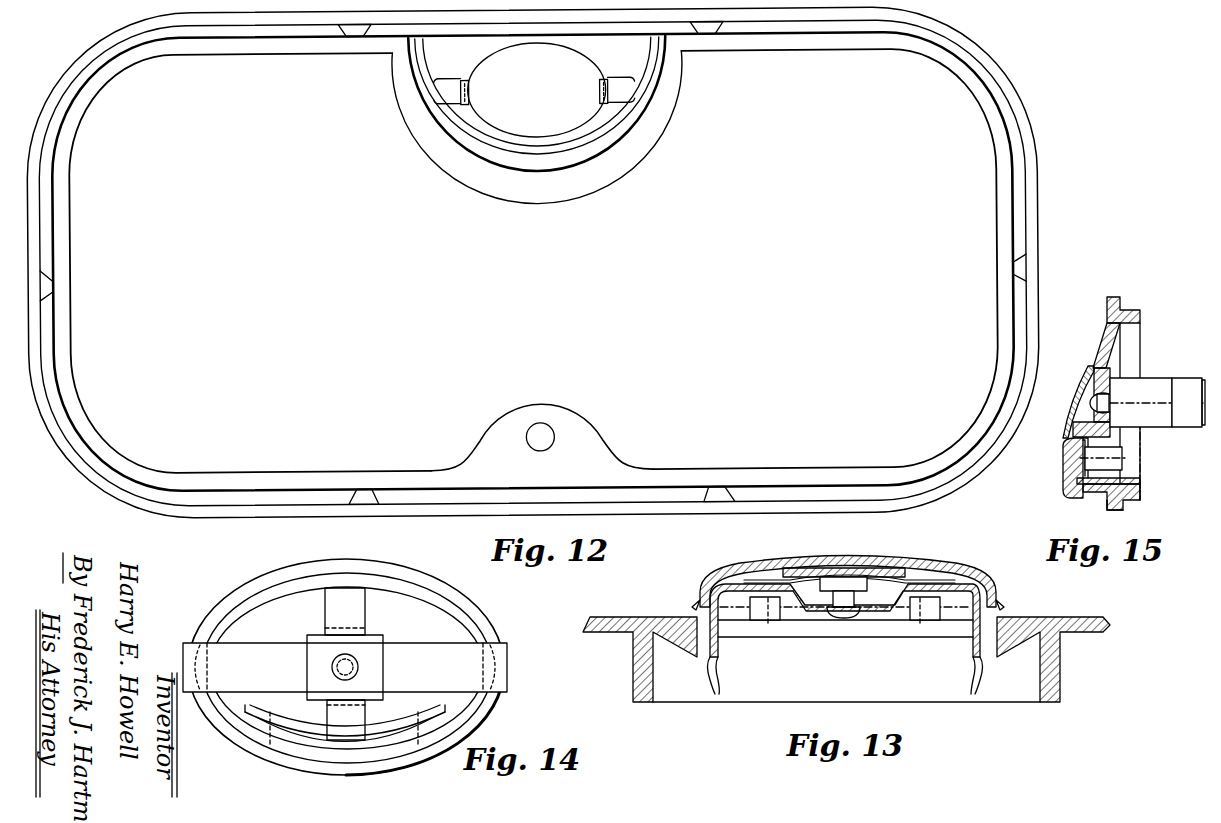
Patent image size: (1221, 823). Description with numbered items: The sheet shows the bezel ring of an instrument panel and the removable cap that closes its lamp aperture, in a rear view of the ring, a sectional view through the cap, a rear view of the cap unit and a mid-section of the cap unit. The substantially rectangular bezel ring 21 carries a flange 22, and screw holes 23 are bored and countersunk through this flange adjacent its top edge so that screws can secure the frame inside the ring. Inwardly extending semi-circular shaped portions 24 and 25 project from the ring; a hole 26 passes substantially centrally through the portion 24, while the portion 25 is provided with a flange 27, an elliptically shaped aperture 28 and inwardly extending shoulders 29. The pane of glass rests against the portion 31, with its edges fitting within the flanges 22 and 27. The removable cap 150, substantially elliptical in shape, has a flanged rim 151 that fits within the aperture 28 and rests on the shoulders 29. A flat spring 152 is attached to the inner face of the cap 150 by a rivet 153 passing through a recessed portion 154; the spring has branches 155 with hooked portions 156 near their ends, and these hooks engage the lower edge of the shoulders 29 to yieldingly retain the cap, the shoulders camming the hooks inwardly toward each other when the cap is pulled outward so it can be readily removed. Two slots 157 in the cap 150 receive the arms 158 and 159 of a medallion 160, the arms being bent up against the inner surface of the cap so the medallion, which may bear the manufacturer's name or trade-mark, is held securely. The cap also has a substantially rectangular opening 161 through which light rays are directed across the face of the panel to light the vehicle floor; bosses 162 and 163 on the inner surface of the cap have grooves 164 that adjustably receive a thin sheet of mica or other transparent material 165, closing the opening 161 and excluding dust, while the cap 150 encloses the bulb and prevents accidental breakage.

In FIG. 12, the bezel ring 21 is at (1040, 212).
In FIG. 13, the bezel ring 21 is at (1030, 612).
In FIG. 12, the flange 22 is at (1020, 178).
In FIG. 12, the screw holes 23 is at (356, 35).
In FIG. 12, the semi-circular shaped portion 24 is at (583, 413).
In FIG. 12, the semi-circular shaped portion 25 is at (626, 150).
In FIG. 12, the hole 26 is at (540, 434).
In FIG. 12, the flange 27 is at (490, 142).
In FIG. 13, the flange 27 is at (1062, 670).
In FIG. 12, the elliptically shaped aperture 28 is at (542, 120).
In FIG. 12, the shoulders 29 is at (601, 93).
In FIG. 13, the shoulders 29 is at (700, 652).
In FIG. 12, the portion 31 is at (278, 52).
In FIG. 15, the removable cap 150 is at (1104, 330).
In FIG. 13, the removable cap 150 is at (978, 565).
In FIG. 14, the removable cap 150 is at (221, 600).
In FIG. 15, the flanged rim 151 is at (1121, 310).
In FIG. 13, the flat spring 152 is at (878, 615).
In FIG. 14, the flat spring 152 is at (443, 652).
In FIG. 15, the rivet 153 is at (1103, 403).
In FIG. 13, the rivet 153 is at (841, 603).
In FIG. 14, the rivet 153 is at (350, 667).
In FIG. 13, the recessed portion 154 is at (857, 573).
In FIG. 15, the branches 155 is at (1157, 386).
In FIG. 13, the branches 155 is at (720, 645).
In FIG. 14, the branches 155 is at (345, 667).
In FIG. 15, the hooked portions 156 is at (1192, 386).
In FIG. 13, the hooked portions 156 is at (712, 672).
In FIG. 15, the slots 157 is at (1098, 368).
In FIG. 15, the arm 158 is at (1112, 358).
In FIG. 14, the arm 158 is at (333, 608).
In FIG. 15, the arm 159 is at (1128, 481).
In FIG. 15, the medallion 160 is at (1076, 390).
In FIG. 13, the medallion 160 is at (833, 568).
In FIG. 15, the rectangular opening 161 is at (1092, 498).
In FIG. 14, the rectangular opening 161 is at (305, 733).
In FIG. 13, the boss 162 is at (766, 622).
In FIG. 13, the boss 163 is at (920, 622).
In FIG. 15, the grooves 164 is at (1063, 492).
In FIG. 15, the sheet of mica or other transparent material 165 is at (1112, 512).
In FIG. 13, the sheet of mica or other transparent material 165 is at (913, 567).
In FIG. 14, the sheet of mica or other transparent material 165 is at (373, 743).